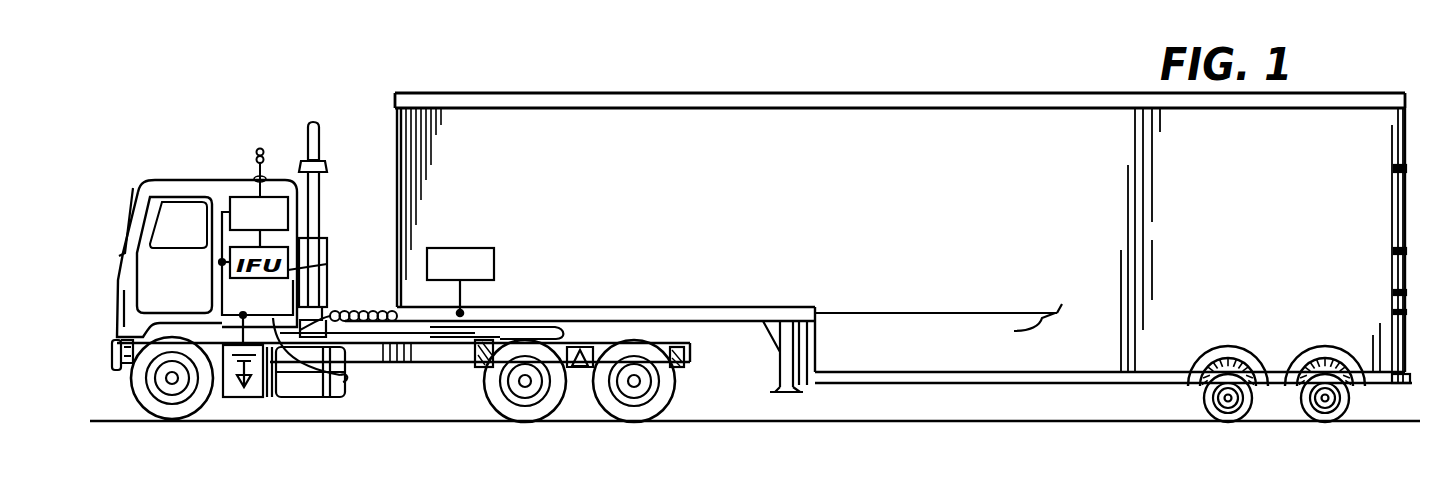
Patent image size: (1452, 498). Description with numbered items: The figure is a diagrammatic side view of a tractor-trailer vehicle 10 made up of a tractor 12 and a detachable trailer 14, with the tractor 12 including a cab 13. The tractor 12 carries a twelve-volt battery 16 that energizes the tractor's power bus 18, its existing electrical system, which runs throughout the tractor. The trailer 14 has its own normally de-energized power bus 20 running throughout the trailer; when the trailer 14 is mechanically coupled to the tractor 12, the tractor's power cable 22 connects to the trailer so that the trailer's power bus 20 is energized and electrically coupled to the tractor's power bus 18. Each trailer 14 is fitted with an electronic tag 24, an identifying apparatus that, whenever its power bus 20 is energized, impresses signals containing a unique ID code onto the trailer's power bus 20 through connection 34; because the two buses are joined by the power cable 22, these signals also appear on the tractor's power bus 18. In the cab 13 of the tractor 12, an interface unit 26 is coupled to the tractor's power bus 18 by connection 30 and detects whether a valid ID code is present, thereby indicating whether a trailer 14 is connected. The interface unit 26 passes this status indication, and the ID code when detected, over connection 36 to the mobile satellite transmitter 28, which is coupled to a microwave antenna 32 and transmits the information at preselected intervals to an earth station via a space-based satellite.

The tractor-trailer vehicle 10 is at (572, 89).
The tractor 12 is at (131, 205).
The cab 13 is at (210, 180).
The trailer 14 is at (941, 117).
The 12-volt battery 16 is at (253, 397).
The power bus 18 is at (233, 317).
The power bus 20 is at (838, 313).
The power cable 22 is at (379, 284).
The electronic tag 24 is at (483, 248).
The interface unit 26 is at (327, 264).
The mobile satellite transmitter 28 is at (288, 216).
The connection 30 is at (226, 299).
The microwave antenna 32 is at (260, 148).
The connection 34 is at (462, 290).
The connection 36 is at (262, 238).